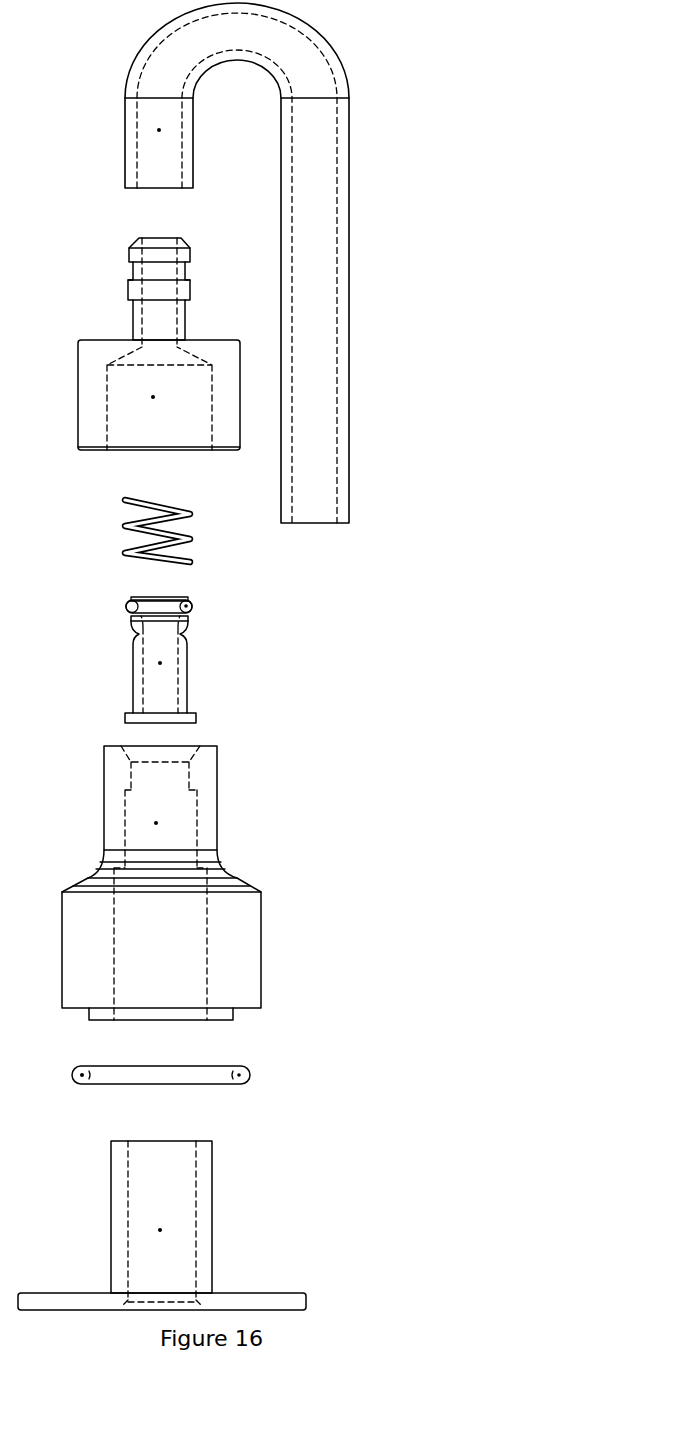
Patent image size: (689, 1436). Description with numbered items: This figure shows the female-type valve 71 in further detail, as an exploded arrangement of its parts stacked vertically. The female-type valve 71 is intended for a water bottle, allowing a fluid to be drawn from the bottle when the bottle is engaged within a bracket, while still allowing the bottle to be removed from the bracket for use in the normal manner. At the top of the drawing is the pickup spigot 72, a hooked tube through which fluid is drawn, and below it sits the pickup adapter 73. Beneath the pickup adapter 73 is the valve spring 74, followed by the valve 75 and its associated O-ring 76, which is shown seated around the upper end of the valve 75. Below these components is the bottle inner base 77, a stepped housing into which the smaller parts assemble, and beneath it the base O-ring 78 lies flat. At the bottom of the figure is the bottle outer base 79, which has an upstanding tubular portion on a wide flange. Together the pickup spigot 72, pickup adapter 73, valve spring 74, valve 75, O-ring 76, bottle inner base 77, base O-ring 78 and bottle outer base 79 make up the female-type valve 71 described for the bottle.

The female-type valve 71 is at (521, 67).
The pickup spigot 72 is at (330, 52).
The pickup adapter 73 is at (210, 348).
The valve spring 74 is at (192, 537).
The valve 75 is at (170, 682).
The O-ring 76 is at (189, 605).
The bottle inner base 77 is at (208, 782).
The base O-ring 78 is at (240, 1073).
The bottle outer base 79 is at (205, 1183).